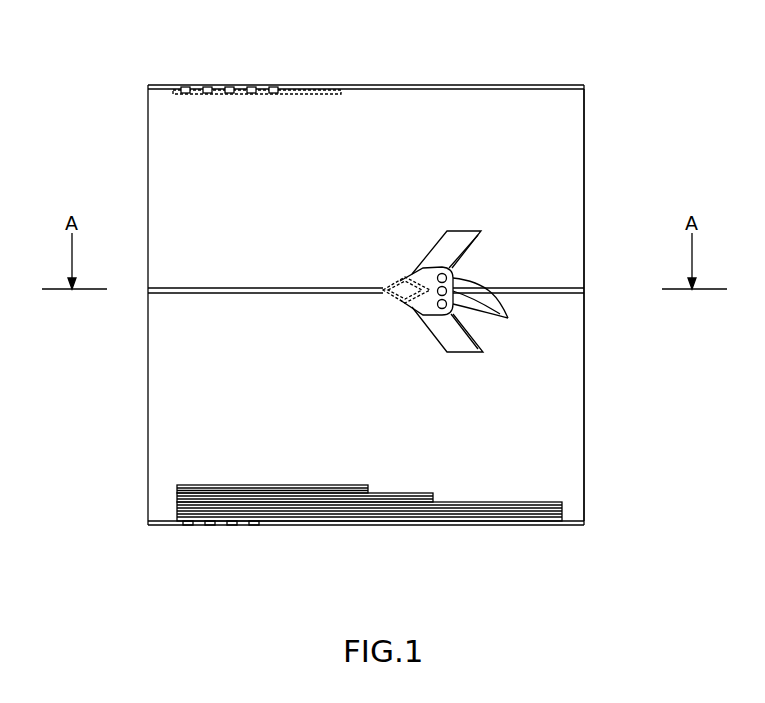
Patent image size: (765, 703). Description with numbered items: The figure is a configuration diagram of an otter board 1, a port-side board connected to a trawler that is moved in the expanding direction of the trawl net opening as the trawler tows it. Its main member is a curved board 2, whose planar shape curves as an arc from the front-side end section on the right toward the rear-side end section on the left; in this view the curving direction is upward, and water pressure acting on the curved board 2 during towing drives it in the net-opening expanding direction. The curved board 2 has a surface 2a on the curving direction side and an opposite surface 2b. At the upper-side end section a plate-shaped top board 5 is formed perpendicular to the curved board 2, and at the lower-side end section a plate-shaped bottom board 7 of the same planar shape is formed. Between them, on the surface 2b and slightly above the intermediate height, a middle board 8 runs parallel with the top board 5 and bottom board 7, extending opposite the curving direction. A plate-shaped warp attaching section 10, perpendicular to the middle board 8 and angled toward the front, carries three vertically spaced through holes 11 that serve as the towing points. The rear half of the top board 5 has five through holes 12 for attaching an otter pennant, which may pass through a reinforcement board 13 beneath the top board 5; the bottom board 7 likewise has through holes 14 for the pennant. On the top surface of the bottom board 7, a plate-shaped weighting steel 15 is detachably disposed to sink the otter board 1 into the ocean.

The otter board 1 is at (136, 68).
The curved board 2 is at (584, 147).
The surface on the curving direction side 2a is at (550, 195).
The surface on the side opposing the curving direction 2b is at (541, 234).
The top board 5 is at (357, 85).
The bottom board 7 is at (357, 526).
The middle board 8 is at (295, 288).
The warp attaching section 10 is at (426, 268).
The through holes for attaching the warp 11 is at (497, 303).
The through holes for attaching an otter pennant 12 is at (236, 83).
The reinforcement board 13 is at (306, 95).
The through holes for attaching the otter pennant 14 is at (232, 528).
The weighting steel 15 is at (300, 485).